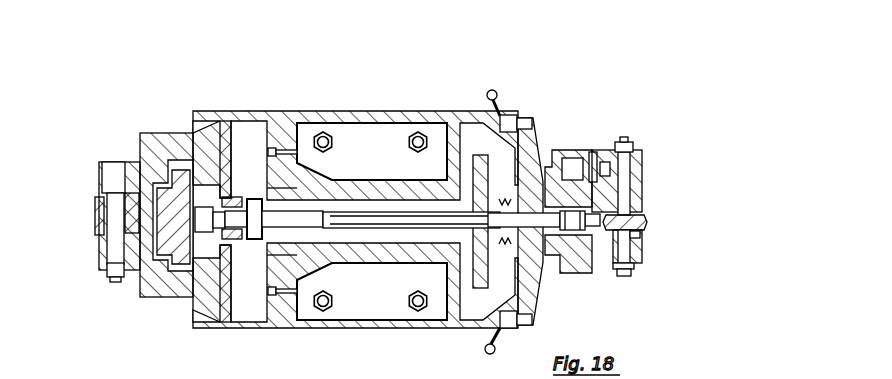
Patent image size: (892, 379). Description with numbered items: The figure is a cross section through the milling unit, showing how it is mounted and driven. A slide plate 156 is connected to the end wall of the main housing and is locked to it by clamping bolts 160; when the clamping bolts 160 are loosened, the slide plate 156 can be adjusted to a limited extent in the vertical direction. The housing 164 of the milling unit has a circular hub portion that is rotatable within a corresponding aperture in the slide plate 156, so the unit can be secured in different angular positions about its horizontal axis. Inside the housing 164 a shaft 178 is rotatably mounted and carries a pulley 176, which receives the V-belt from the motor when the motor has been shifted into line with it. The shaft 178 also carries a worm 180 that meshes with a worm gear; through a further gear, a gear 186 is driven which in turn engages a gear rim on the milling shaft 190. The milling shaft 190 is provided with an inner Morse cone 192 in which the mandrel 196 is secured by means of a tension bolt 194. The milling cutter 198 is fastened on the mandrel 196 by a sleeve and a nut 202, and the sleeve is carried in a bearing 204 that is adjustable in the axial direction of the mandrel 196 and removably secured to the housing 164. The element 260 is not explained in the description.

The slide plate 156 is at (533, 140).
The clamping bolts 160 is at (501, 117).
The housing 164 is at (585, 258).
The pulley 176 is at (506, 244).
The shaft 178 is at (545, 227).
The worm 180 is at (568, 216).
The gear 186 is at (593, 158).
The milling shaft 190 is at (638, 166).
The inner Morse cone 192 is at (627, 201).
The tension bolt 194 is at (627, 141).
The mandrel 196 is at (632, 252).
The milling cutter 198 is at (645, 221).
The nut 202 is at (625, 276).
The bearing 204 is at (635, 266).
The spacer 260 is at (641, 235).